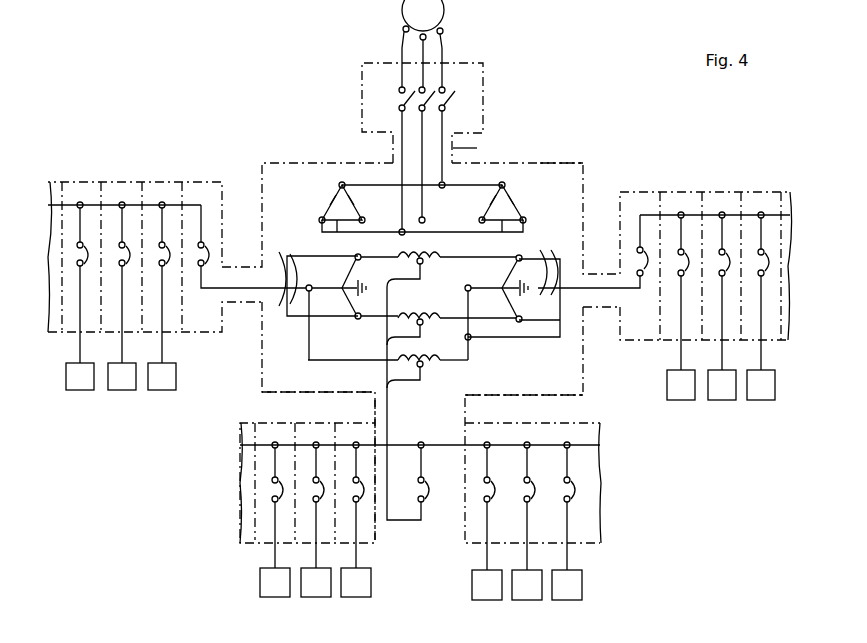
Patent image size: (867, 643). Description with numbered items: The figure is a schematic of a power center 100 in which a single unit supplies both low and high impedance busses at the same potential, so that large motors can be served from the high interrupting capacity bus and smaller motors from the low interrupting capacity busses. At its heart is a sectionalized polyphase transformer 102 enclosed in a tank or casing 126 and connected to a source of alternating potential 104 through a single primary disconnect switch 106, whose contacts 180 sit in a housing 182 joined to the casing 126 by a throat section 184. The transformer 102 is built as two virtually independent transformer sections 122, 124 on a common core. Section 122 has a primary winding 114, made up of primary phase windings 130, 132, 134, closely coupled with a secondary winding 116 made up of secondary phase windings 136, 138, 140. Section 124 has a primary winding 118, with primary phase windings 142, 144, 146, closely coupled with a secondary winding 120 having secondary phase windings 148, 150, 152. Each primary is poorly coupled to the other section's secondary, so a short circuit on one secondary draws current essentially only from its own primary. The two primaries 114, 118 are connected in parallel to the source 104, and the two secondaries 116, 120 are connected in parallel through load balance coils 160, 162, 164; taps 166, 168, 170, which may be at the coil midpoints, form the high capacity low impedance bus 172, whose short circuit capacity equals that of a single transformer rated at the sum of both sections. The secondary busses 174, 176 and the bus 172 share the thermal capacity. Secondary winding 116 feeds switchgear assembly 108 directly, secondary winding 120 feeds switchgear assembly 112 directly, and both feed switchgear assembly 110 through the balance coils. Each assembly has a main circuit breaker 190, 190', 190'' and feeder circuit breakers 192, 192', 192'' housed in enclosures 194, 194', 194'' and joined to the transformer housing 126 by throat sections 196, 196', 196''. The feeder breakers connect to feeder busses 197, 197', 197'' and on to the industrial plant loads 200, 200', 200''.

The power center 100 is at (565, 77).
The sectionalized polyphase transformer 102 is at (268, 191).
The source of alternating potential 104 is at (444, 13).
The primary disconnecting means or switch 106 is at (495, 107).
The secondary switchgear assembly 108 is at (165, 173).
The secondary switchgear assembly 110 is at (402, 573).
The secondary switchgear assembly 112 is at (729, 179).
The primary winding 114 is at (309, 188).
The secondary winding 116 is at (316, 340).
The primary winding 118 is at (507, 188).
The secondary winding 120 is at (488, 358).
The transformer section 122 is at (318, 381).
The transformer section 124 is at (488, 381).
The tank or casing 126 is at (556, 163).
The primary phase winding 130 is at (330, 208).
The primary phase winding 132 is at (350, 200).
The primary phase winding 134 is at (328, 238).
The secondary phase winding 136 is at (349, 270).
The secondary phase winding 138 is at (349, 308).
The secondary phase winding 140 is at (326, 286).
The primary phase winding 142 is at (492, 201).
The primary phase winding 144 is at (514, 200).
The primary phase winding 146 is at (497, 238).
The secondary phase winding 148 is at (512, 270).
The secondary phase winding 150 is at (510, 306).
The secondary phase winding 152 is at (480, 287).
The load balance coil 160 is at (408, 258).
The load balance coil 162 is at (424, 311).
The load balance coil 164 is at (412, 358).
The tap 166 is at (423, 264).
The tap 168 is at (423, 325).
The tap 170 is at (422, 368).
The low impedance bus 172 is at (388, 388).
The bus 174 is at (286, 269).
The bus 176 is at (543, 262).
The contacts 180 is at (453, 97).
The housing 182 is at (362, 110).
The throat section 184 is at (480, 149).
The main circuit breaker 190 is at (252, 246).
The main circuit breaker 190' is at (439, 472).
The main circuit breaker 190'' is at (593, 251).
The feeder circuit breakers 192 is at (123, 257).
The feeder circuit breakers 192' is at (423, 488).
The feeder circuit breakers 192'' is at (723, 266).
The enclosure 194 is at (122, 243).
The enclosure 194' is at (295, 469).
The enclosure 194'' is at (720, 250).
The throat section 196 is at (155, 319).
The throat section 196' is at (351, 469).
The throat section 196'' is at (601, 324).
The feeder bus 197 is at (120, 314).
The feeder bus 197' is at (421, 536).
The feeder bus 197'' is at (720, 323).
The industrial plant loads 200 is at (121, 393).
The industrial plant loads 200' is at (421, 601).
The industrial plant loads 200'' is at (721, 401).